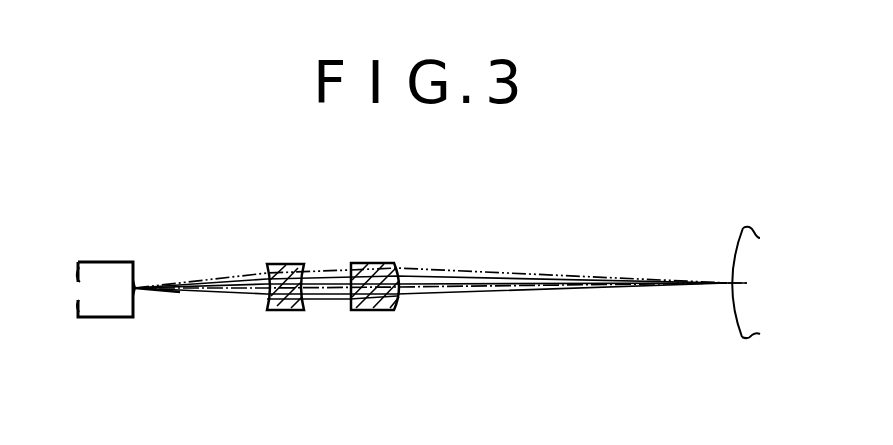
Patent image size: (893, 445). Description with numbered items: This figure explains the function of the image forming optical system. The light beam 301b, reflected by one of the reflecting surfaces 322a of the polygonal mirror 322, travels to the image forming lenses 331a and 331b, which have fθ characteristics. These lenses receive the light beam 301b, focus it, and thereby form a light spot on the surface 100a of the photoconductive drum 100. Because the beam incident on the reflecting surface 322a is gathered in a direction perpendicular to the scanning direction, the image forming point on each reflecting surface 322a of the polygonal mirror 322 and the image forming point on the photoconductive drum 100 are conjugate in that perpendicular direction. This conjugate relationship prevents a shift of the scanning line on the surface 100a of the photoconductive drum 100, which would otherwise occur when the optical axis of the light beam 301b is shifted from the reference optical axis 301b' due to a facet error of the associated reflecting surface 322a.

The polygonal mirror 322 is at (113, 262).
The reflecting surface 322a is at (134, 305).
The light beam 301b is at (441, 322).
The reference optical axis 301b' is at (332, 339).
The image forming lens 331a is at (275, 264).
The image forming lens 331b is at (383, 312).
The photoconductive drum 100 is at (731, 258).
The surface of the photoconductive drum 100a is at (728, 313).